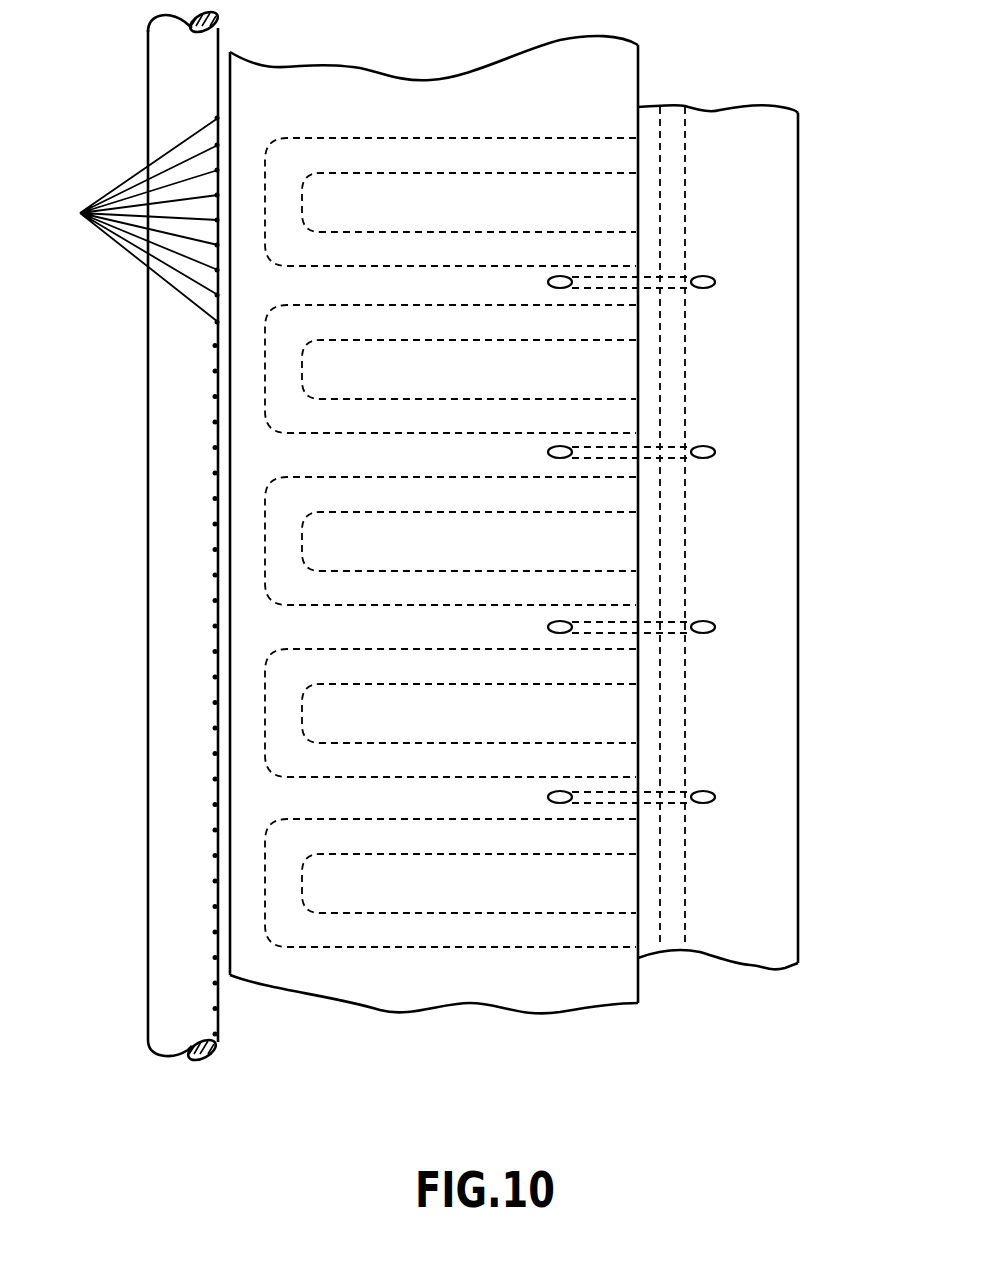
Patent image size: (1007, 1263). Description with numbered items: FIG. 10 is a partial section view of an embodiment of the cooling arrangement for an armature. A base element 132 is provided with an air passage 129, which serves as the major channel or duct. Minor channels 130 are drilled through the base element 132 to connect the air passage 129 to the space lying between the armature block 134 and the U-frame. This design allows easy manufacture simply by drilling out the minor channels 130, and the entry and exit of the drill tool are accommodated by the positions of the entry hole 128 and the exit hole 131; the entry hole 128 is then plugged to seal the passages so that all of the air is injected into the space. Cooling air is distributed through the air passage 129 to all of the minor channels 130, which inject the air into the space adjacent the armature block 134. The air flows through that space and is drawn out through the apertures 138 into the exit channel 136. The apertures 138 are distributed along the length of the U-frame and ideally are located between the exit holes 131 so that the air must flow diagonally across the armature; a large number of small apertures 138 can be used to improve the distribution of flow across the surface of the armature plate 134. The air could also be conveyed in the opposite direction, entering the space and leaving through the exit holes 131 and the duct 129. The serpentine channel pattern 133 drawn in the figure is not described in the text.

The entry hole 128 is at (715, 283).
The air passage 129 is at (685, 378).
The minor channels 130 is at (668, 460).
The exit hole 131 is at (548, 453).
The base element 132 is at (798, 732).
The serpentine channel 133 is at (385, 608).
The armature block 134 is at (380, 808).
The exit channel 136 is at (147, 412).
The apertures 138 is at (126, 220).